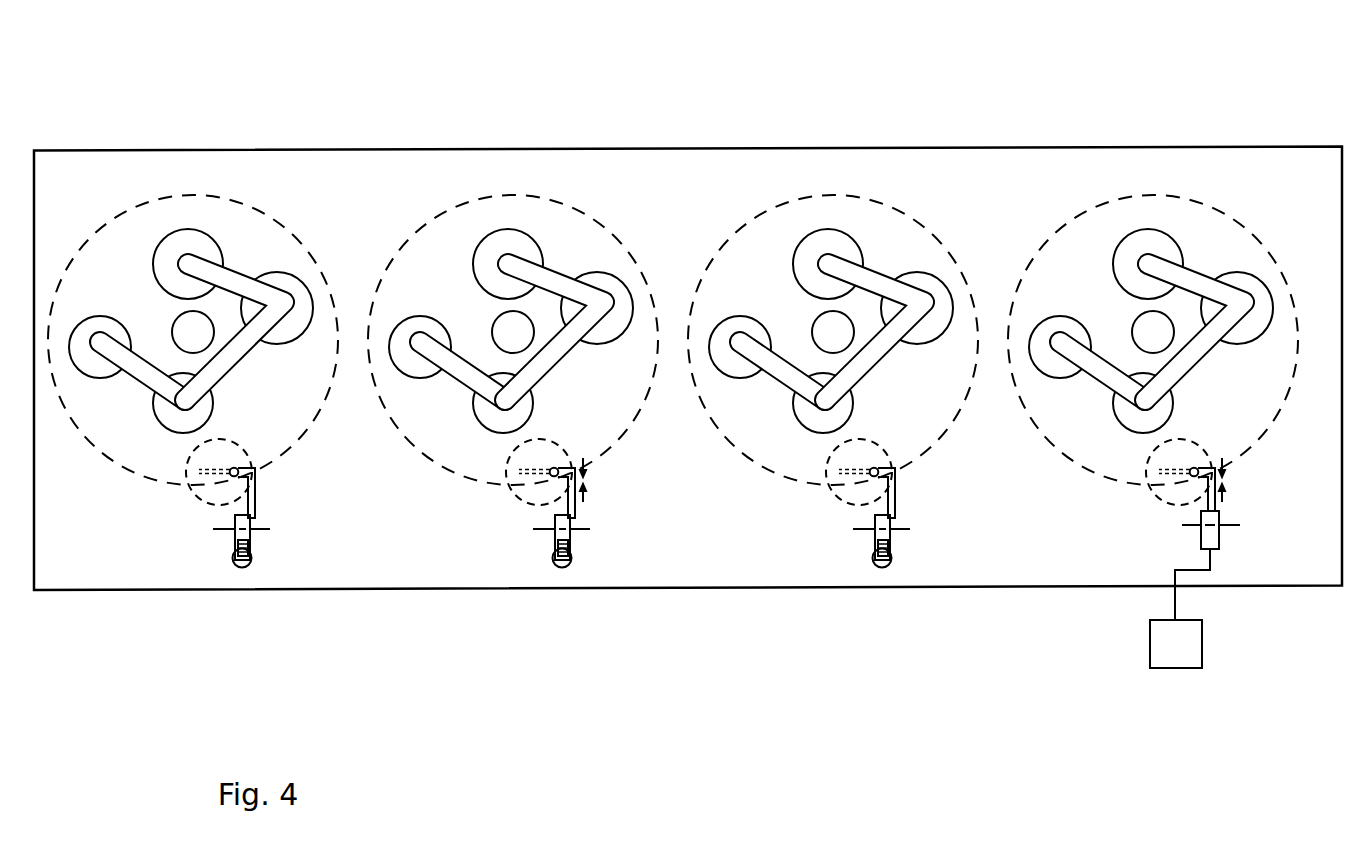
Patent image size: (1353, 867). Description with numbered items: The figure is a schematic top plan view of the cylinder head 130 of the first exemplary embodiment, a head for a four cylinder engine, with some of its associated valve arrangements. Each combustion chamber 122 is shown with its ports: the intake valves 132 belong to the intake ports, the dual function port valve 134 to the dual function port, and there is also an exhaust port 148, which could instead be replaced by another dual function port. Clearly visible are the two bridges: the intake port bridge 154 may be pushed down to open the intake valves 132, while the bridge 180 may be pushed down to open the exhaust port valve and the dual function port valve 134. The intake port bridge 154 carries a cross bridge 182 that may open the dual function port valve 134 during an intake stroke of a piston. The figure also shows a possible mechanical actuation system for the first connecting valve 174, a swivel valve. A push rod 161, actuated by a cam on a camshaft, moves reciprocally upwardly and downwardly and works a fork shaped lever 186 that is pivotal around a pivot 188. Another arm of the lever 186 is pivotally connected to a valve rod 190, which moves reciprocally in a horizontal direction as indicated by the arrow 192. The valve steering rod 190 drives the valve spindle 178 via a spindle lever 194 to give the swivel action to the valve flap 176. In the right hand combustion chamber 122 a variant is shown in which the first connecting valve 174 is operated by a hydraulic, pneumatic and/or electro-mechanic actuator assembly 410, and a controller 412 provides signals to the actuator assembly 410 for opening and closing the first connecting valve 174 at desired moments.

The combustion chamber 122 is at (146, 200).
The cylinder head 130 is at (895, 125).
The intake valve 132 is at (197, 243).
The dual function port valve 134 is at (175, 423).
The exhaust port 148 is at (96, 325).
The intake port bridge 154 is at (229, 284).
The push rod 161 is at (243, 566).
The first connecting valve 174 is at (217, 485).
The valve flap 176 is at (522, 477).
The valve spindle 178 is at (555, 468).
The bridge 180 is at (143, 375).
The cross bridge 182 is at (231, 360).
The fork shaped lever 186 is at (569, 541).
The pivot 188 is at (585, 532).
The valve rod 190 is at (575, 515).
The arrow 192 is at (586, 477).
The spindle lever 194 is at (569, 468).
The actuator assembly 410 is at (1217, 537).
The controller 412 is at (1187, 642).